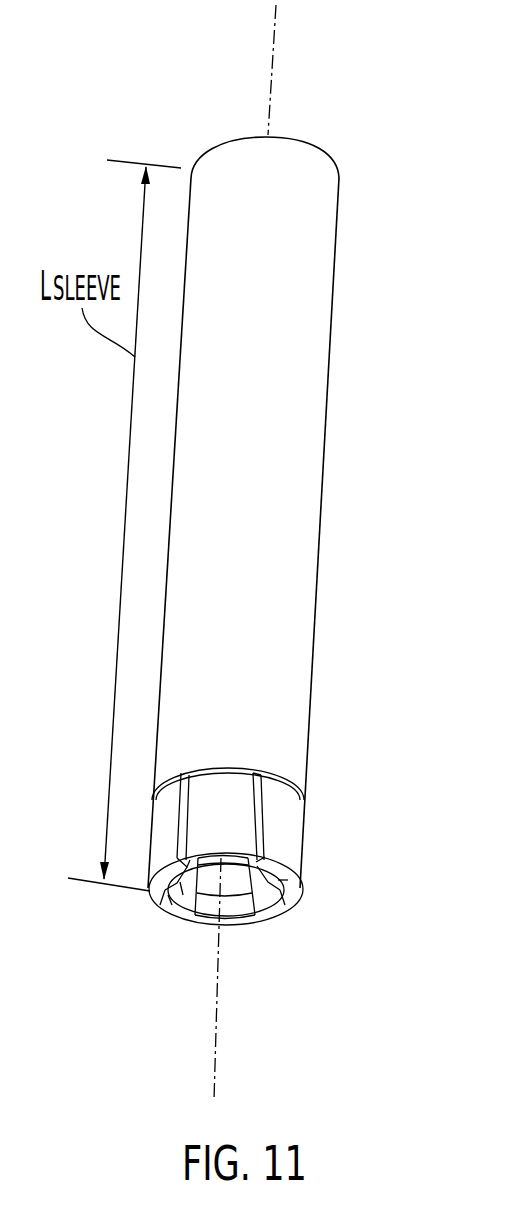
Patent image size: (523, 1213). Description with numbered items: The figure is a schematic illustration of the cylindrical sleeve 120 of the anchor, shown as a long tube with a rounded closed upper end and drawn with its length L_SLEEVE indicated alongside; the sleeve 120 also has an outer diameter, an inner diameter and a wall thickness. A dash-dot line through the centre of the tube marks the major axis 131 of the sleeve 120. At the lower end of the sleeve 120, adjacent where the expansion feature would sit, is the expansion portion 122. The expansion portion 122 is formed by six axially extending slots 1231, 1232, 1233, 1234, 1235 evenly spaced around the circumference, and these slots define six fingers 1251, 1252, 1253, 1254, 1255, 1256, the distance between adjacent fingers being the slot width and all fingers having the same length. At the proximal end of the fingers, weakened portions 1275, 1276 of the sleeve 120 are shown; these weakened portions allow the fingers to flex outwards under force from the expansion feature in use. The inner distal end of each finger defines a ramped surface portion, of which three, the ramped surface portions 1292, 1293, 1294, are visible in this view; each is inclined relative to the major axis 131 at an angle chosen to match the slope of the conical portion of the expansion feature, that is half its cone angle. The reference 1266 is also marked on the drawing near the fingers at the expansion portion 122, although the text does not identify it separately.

The sleeve 120 is at (322, 318).
The major axis 131 is at (277, 75).
The expansion portion 122 is at (366, 853).
The weakened portion 1276 is at (193, 768).
The weakened portion 1275 is at (157, 782).
The slot 1235 is at (187, 815).
The finger 1255 is at (155, 832).
The slot 1234 is at (150, 890).
The ramped surface portion 1294 is at (168, 895).
The finger 1254 is at (180, 882).
The slot 1233 is at (208, 908).
The ramped surface portion 1293 is at (213, 915).
The finger 1253 is at (232, 920).
The slot 1232 is at (258, 915).
The ramped surface portion 1292 is at (297, 913).
The finger 1252 is at (293, 898).
The slot 1231 is at (280, 893).
The finger 1251 is at (290, 833).
The rib 1266 is at (260, 793).
The finger 1256 is at (250, 768).